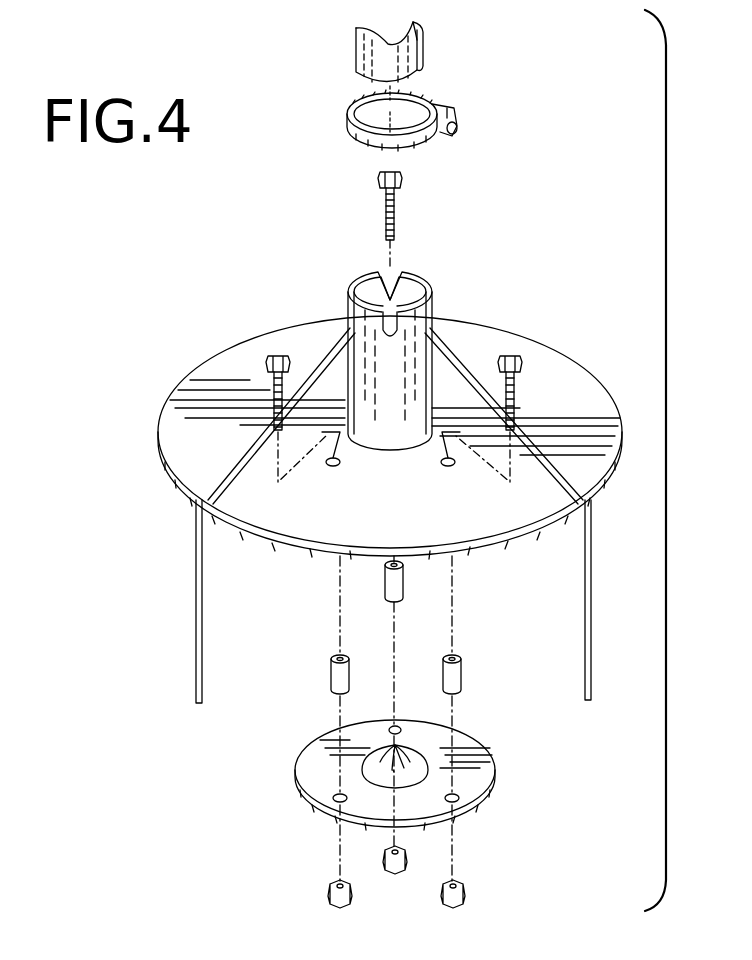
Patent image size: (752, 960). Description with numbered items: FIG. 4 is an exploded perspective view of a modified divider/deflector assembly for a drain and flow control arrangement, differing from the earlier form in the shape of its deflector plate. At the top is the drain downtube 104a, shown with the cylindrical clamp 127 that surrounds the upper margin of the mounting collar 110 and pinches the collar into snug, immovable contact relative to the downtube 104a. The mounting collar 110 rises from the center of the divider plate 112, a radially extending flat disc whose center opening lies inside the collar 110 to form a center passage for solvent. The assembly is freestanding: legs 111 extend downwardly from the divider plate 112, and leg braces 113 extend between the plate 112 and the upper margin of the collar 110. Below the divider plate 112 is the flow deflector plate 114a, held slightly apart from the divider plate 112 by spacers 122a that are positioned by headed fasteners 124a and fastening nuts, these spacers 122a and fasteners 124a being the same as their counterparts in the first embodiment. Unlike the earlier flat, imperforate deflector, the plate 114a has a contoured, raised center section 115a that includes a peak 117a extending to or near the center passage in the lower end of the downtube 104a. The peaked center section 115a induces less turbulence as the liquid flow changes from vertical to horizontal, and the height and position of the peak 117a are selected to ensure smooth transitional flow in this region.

The downtube 104a is at (425, 64).
The cylindrical clamp 127 is at (450, 142).
The mounting collar 110 is at (412, 292).
The divider plate 112 is at (456, 328).
The leg braces 113 is at (318, 350).
The legs 111 is at (203, 560).
The fasteners 124a is at (515, 356).
The spacers 122a is at (330, 668).
The flow deflector plate 114a is at (470, 750).
The peak 117a is at (390, 745).
The contoured center section 115a is at (380, 775).